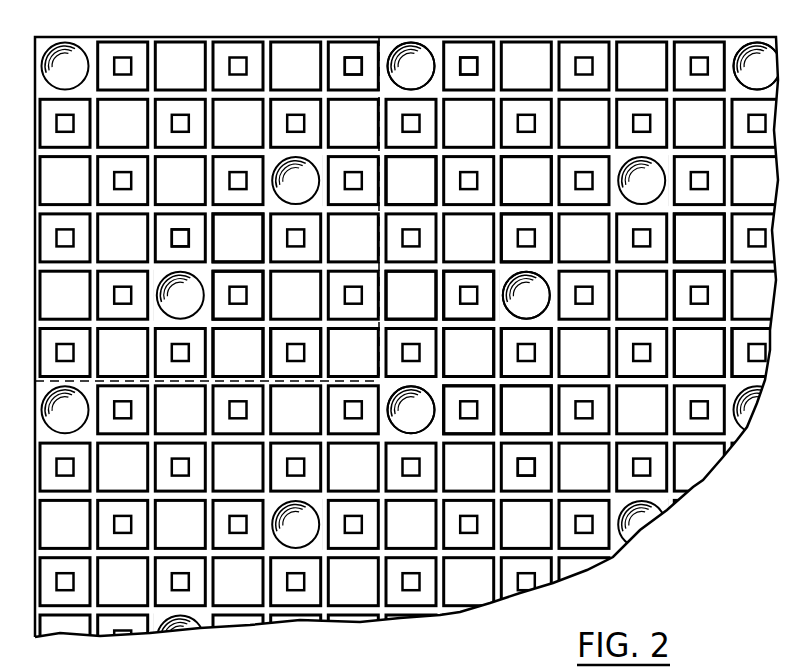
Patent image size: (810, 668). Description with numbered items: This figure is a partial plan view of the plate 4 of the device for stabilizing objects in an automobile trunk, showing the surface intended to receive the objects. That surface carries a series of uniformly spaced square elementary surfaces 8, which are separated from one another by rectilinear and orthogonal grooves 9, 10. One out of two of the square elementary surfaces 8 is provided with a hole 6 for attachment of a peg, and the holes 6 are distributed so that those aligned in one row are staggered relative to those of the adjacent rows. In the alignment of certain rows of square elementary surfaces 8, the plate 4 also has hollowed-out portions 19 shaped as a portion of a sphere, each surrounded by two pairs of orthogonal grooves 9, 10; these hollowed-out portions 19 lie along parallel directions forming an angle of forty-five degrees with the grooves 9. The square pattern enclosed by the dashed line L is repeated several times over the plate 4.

The plate 4 is at (673, 537).
The holes 6 is at (470, 65).
The square elementary surfaces 8 is at (420, 170).
The grooves 9 is at (245, 271).
The grooves 10 is at (265, 352).
The hollowed-out portions 19 is at (410, 63).
The dashed line L is at (382, 143).